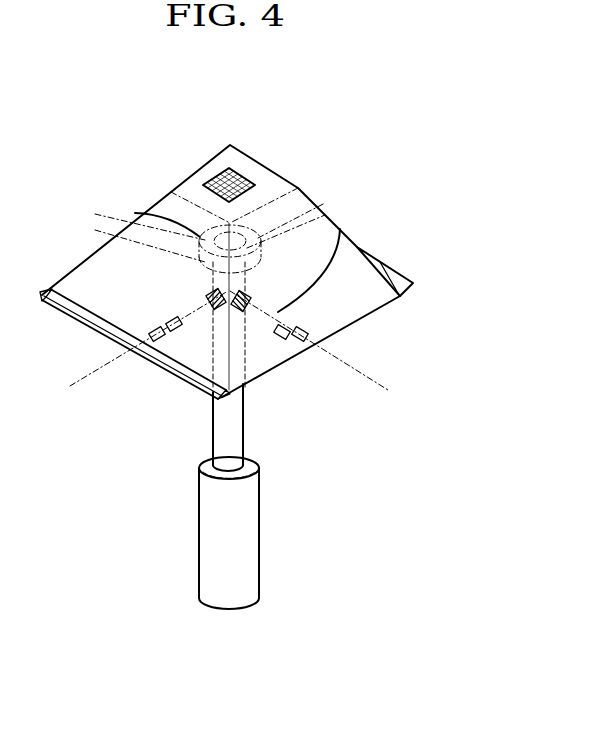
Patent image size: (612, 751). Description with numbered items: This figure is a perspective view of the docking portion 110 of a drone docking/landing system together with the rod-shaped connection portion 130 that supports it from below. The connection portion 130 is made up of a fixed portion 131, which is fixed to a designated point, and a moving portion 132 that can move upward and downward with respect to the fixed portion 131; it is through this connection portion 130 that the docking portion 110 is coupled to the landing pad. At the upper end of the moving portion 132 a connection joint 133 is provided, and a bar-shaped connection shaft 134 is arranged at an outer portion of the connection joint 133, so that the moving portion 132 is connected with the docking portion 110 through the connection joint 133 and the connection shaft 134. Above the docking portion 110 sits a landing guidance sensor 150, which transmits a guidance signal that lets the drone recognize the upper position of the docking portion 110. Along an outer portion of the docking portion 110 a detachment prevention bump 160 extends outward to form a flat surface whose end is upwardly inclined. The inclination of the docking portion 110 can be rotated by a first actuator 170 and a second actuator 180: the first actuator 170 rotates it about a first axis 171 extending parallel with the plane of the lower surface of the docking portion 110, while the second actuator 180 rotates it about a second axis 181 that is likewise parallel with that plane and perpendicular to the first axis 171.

The docking portion 110 is at (359, 329).
The connection portion 130 is at (276, 447).
The fixed portion 131 is at (248, 525).
The moving portion 132 is at (243, 427).
The connection joint 133 is at (204, 231).
The connection shaft 134 is at (135, 213).
The landing guidance sensor 150 is at (222, 182).
The detachment prevention bump 160 is at (174, 372).
The first actuator 170 is at (180, 313).
The first axis 171 is at (84, 378).
The second actuator 180 is at (336, 231).
The second axis 181 is at (363, 374).